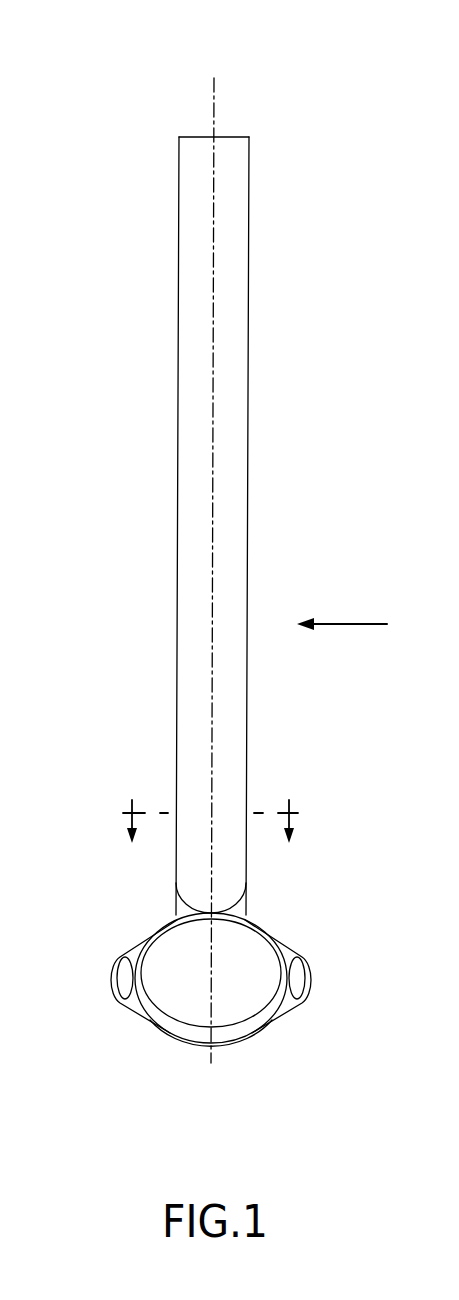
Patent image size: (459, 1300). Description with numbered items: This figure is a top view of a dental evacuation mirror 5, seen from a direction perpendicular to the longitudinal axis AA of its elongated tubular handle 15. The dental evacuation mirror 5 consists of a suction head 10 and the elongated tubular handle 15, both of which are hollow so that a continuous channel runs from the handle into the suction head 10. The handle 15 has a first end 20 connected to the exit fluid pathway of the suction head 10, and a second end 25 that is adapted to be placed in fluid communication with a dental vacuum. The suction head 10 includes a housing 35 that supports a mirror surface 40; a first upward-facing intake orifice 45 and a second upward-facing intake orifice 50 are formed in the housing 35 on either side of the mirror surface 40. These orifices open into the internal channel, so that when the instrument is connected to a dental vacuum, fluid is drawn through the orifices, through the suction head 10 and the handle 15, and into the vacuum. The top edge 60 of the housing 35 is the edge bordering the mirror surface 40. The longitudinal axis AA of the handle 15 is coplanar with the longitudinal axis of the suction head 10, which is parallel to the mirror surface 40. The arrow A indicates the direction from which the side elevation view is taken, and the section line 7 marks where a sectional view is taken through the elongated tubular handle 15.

The dental evacuation mirror 5 is at (199, 558).
The suction head 10 is at (199, 989).
The elongated tubular handle 15 is at (247, 498).
The first end 20 is at (246, 915).
The second end 25 is at (249, 137).
The housing 35 is at (165, 1020).
The mirror surface 40 is at (243, 997).
The first upward-facing intake orifice 45 is at (297, 973).
The second upward-facing intake orifice 50 is at (122, 973).
The top edge 60 is at (270, 932).
The longitudinal axis AA is at (214, 92).
The arrow A is at (360, 624).
The sectional view 7 is at (211, 821).